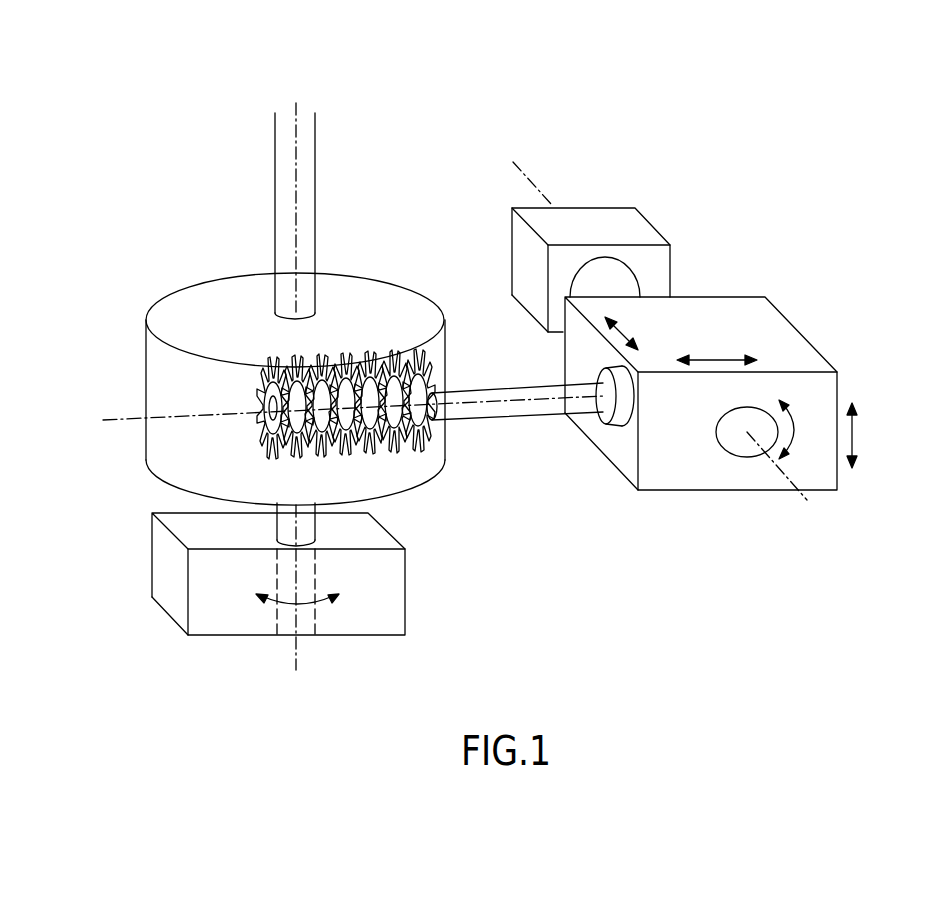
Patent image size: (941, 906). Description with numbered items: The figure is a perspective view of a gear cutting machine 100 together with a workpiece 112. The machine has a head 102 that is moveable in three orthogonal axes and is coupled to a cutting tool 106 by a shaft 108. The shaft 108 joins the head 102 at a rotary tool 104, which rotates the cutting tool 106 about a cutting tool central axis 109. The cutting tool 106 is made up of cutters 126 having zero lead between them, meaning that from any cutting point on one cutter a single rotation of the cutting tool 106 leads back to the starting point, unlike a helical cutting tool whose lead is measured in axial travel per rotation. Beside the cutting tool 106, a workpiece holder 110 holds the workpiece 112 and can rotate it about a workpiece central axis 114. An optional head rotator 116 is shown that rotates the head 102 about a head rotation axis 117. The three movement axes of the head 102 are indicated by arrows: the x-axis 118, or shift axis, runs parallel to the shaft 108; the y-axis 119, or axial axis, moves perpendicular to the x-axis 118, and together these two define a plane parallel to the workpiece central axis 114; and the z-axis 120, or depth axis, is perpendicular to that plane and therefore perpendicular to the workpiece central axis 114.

The gear cutting machine 100 is at (365, 44).
The head 102 is at (702, 470).
The rotary tool 104 is at (622, 410).
The cutting tool 106 is at (427, 432).
The shaft 108 is at (512, 400).
The cutting tool central axis 109 is at (132, 415).
The workpiece holder 110 is at (407, 588).
The workpiece 112 is at (203, 307).
The workpiece central axis 114 is at (295, 123).
The head rotator 116 is at (632, 223).
The head rotation axis 117 is at (807, 500).
The x-axis 118 is at (707, 353).
The y-axis 119 is at (855, 438).
The z-axis 120 is at (628, 332).
The cutters 126 is at (385, 452).